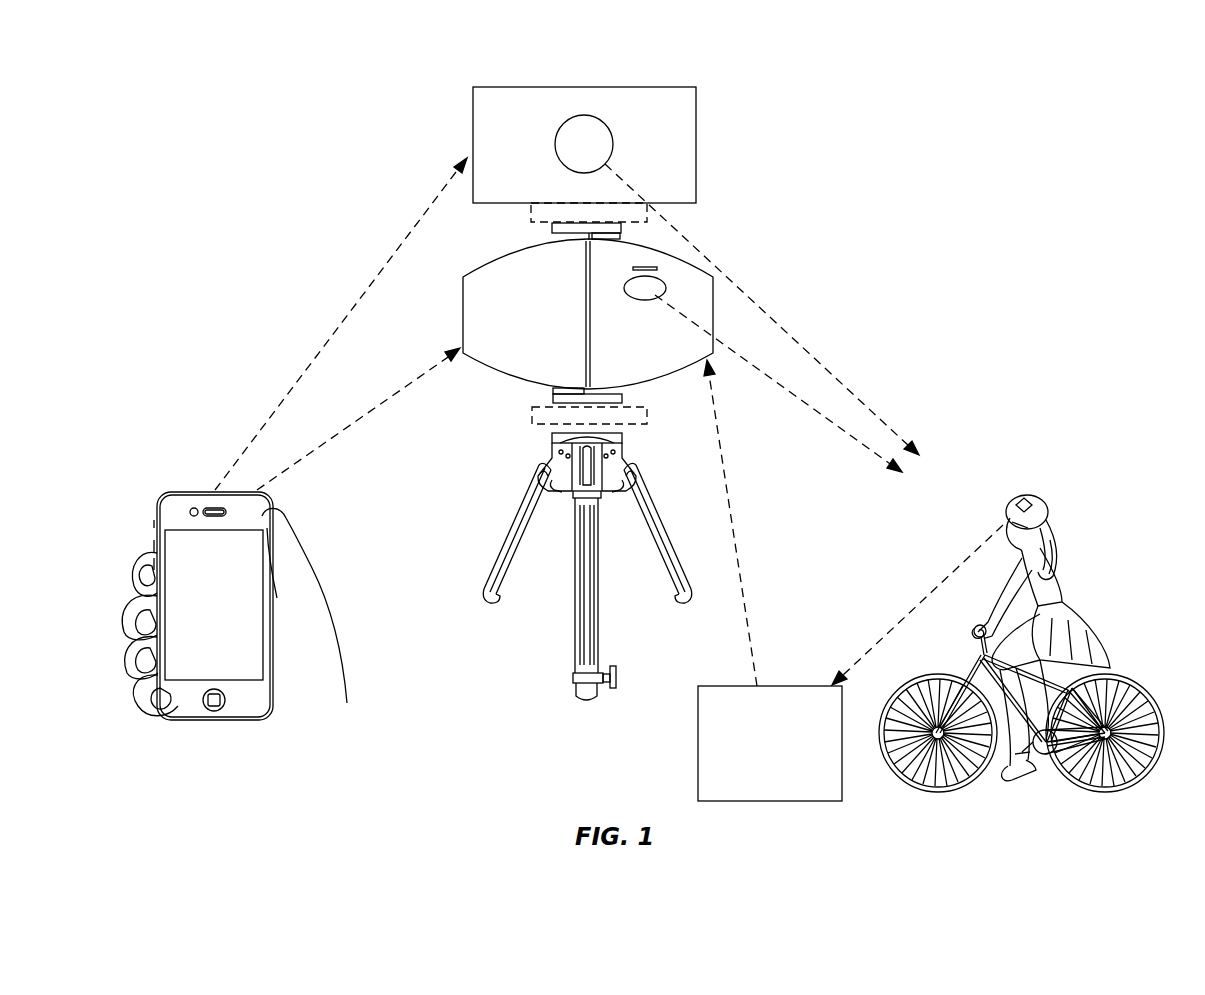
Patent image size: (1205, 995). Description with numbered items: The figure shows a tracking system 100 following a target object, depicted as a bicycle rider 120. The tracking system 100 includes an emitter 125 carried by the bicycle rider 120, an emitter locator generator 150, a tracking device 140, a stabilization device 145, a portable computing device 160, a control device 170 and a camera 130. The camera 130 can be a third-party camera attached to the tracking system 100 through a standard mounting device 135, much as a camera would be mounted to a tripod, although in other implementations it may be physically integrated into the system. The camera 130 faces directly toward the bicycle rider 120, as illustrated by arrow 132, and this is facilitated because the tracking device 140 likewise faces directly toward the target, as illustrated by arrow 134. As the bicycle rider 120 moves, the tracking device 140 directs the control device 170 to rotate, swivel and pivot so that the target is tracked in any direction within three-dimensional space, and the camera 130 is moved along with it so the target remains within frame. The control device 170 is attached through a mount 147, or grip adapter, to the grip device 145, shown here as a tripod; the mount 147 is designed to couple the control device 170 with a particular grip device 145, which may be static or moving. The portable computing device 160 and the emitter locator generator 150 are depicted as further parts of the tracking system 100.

The tracking system 100 is at (726, 76).
The bicycle rider 120 is at (1101, 512).
The emitter 125 is at (1026, 497).
The camera 130 is at (493, 117).
The arrow 132 is at (805, 348).
The arrow 134 is at (867, 448).
The standard mounting device 135 is at (647, 204).
The tracking device 140 is at (656, 355).
The stabilization device 145 is at (552, 450).
The mount 147 is at (647, 415).
The emitter locator generator 150 is at (808, 801).
The portable computing device 160 is at (194, 707).
The control device 170 is at (545, 355).